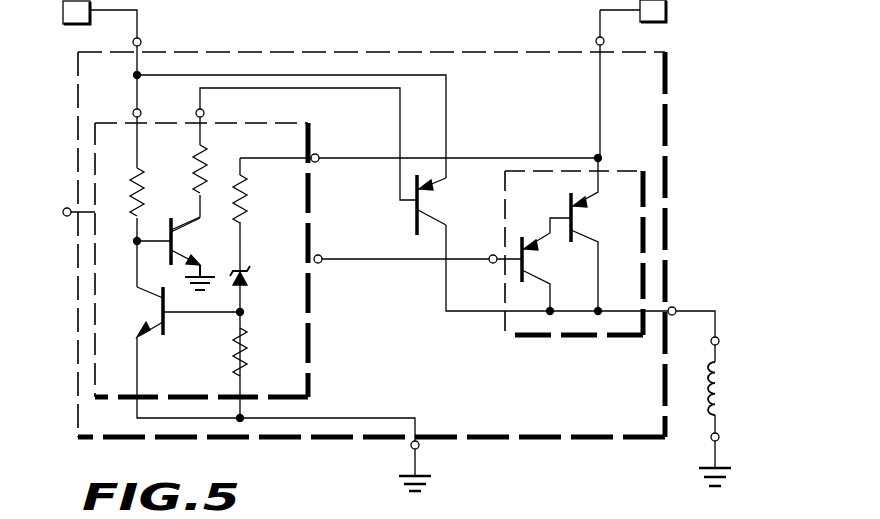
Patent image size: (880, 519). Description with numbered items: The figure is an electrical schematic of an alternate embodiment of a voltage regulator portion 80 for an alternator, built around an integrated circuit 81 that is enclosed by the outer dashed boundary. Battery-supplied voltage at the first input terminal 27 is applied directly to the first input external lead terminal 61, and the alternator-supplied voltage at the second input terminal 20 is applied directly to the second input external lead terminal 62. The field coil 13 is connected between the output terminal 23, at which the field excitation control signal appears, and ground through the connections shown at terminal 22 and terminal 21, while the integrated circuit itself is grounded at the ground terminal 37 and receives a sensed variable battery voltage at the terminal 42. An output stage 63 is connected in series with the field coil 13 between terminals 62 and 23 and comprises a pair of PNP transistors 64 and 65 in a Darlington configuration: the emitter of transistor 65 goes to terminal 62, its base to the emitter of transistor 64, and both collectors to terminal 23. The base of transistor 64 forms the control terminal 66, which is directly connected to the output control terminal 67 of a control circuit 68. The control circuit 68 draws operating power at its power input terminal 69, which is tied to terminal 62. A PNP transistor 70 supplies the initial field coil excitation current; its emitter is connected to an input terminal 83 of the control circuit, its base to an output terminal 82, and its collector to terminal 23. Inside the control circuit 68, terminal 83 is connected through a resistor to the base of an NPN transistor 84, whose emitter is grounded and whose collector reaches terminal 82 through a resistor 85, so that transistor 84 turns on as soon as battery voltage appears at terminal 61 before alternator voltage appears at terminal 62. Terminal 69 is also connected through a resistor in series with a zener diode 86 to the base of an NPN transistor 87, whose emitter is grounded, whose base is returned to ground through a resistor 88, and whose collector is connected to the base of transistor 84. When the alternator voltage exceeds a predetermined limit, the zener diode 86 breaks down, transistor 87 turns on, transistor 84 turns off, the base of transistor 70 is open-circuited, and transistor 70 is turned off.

The field coil 13 is at (722, 392).
The second input terminal 20 is at (667, 10).
The ground terminal 21 is at (719, 439).
The coil terminal 22 is at (719, 340).
The output terminal 23 is at (676, 309).
The first input terminal 27 is at (63, 11).
The ground terminal 37 is at (419, 447).
The sensed voltage input terminal 42 is at (64, 209).
The first input external lead terminal 61 is at (141, 40).
The second input external lead terminal 62 is at (596, 39).
The output stage 63 is at (582, 338).
The PNP transistor 64 is at (537, 262).
The PNP transistor 65 is at (582, 218).
The control terminal 66 is at (491, 255).
The output control terminal 67 is at (322, 257).
The control circuit 68 is at (311, 319).
The power input terminal 69 is at (319, 156).
The PNP transistor 70 is at (430, 198).
The voltage regulator portion 80 is at (309, 496).
The integrated circuit 81 is at (568, 440).
The output terminal 82 is at (204, 112).
The input terminal 83 is at (141, 111).
The NPN transistor 84 is at (180, 243).
The resistor 85 is at (198, 169).
The zener diode 86 is at (248, 288).
The NPN transistor 87 is at (150, 312).
The resistor 88 is at (248, 345).